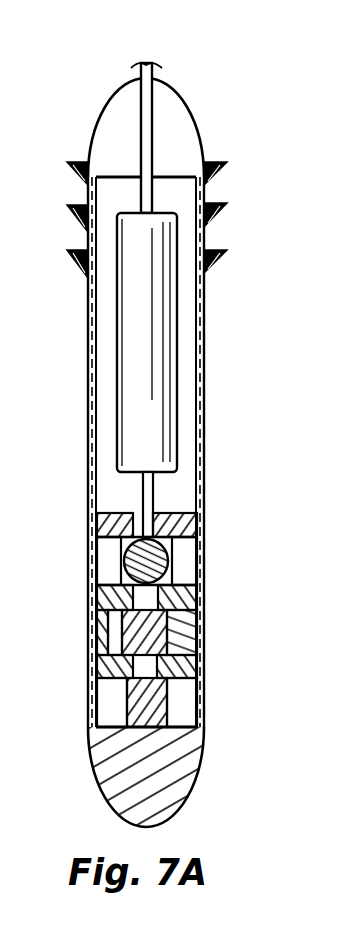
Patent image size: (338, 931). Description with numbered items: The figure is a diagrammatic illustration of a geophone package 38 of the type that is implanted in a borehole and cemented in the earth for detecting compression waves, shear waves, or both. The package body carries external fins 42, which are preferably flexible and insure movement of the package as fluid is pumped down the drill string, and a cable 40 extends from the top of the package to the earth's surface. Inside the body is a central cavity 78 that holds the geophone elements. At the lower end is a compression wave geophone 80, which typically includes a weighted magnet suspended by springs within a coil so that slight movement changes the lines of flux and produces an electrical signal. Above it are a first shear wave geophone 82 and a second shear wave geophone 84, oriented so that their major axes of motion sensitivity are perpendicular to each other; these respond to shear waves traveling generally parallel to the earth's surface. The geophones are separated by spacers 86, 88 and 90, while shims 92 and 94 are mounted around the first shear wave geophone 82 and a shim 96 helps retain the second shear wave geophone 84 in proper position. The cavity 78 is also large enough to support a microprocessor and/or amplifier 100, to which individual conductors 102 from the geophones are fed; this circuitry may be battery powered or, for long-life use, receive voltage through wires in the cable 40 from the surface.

The geophone package 38 is at (206, 421).
The cable 40 is at (148, 103).
The external fins 42 is at (207, 220).
The central cavity 78 is at (192, 387).
The compression wave geophone 80 is at (133, 703).
The first shear wave geophone 82 is at (162, 632).
The second shear wave geophone 84 is at (158, 557).
The spacer 86 is at (185, 663).
The spacer 88 is at (190, 597).
The spacer 90 is at (203, 512).
The shim 92 is at (101, 635).
The shim 94 is at (187, 645).
The shim 96 is at (104, 560).
The microprocessor and/or amplifier 100 is at (160, 303).
The individual conductors 102 is at (143, 490).